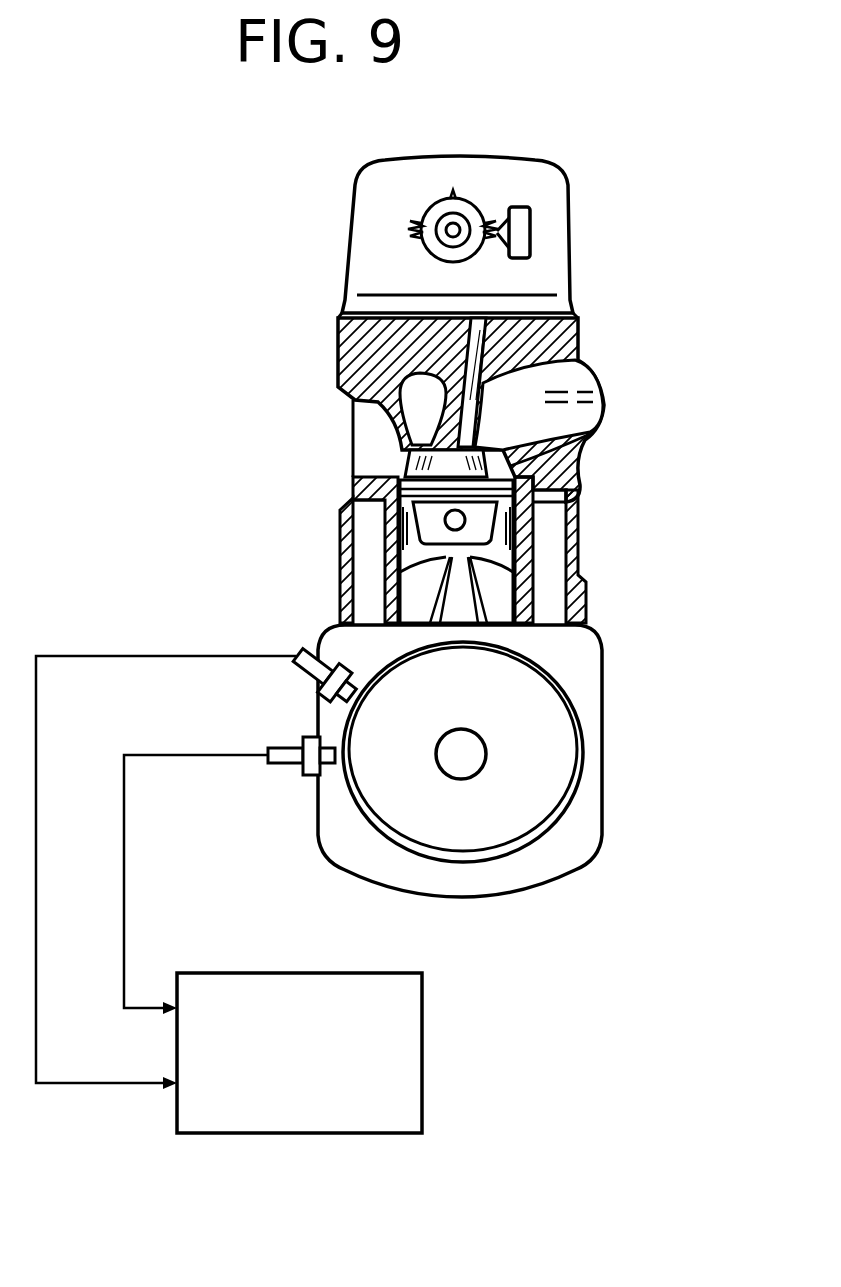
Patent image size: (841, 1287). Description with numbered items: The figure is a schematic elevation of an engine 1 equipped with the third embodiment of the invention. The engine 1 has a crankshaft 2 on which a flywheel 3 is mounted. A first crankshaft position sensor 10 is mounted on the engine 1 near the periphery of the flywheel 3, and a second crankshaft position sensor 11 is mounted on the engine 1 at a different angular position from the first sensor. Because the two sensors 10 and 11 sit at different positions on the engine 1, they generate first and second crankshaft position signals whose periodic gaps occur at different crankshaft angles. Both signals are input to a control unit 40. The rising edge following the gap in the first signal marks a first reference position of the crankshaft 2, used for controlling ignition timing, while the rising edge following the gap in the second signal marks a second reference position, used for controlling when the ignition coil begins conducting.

The engine 1 is at (602, 755).
The crankshaft 2 is at (487, 760).
The flywheel 3 is at (567, 697).
The first crankshaft position sensor 10 is at (273, 748).
The second crankshaft position sensor 11 is at (298, 655).
The control unit 40 is at (422, 1040).